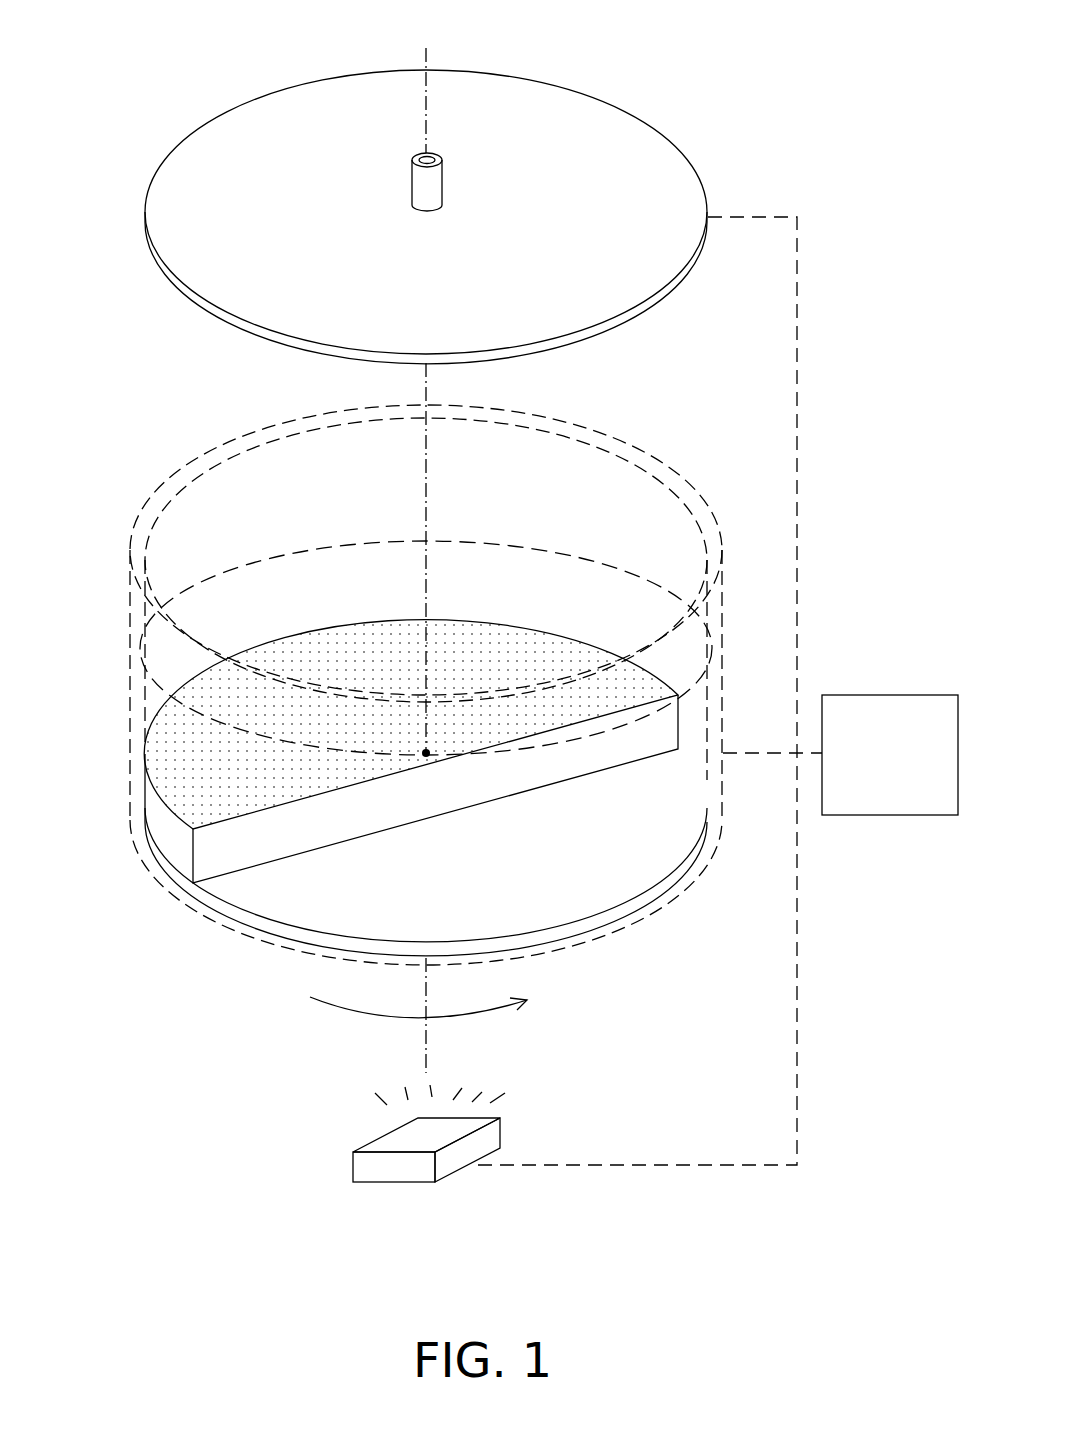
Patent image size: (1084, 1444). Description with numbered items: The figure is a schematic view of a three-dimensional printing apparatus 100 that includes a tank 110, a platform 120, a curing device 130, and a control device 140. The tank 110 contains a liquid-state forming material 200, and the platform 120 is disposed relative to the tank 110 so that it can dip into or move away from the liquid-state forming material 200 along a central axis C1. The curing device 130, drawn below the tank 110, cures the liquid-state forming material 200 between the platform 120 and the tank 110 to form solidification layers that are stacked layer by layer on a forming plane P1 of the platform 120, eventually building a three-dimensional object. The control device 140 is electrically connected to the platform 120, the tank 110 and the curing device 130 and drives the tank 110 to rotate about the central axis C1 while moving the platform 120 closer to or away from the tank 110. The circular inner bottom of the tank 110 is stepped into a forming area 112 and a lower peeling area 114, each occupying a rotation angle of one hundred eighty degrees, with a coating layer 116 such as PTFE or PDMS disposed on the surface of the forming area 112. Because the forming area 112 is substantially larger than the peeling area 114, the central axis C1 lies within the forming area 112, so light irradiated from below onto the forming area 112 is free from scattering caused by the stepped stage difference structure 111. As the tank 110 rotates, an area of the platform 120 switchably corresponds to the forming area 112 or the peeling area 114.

The three-dimensional printing apparatus 100 is at (900, 101).
The tank 110 is at (153, 493).
The stage difference structure 111 is at (381, 817).
The forming area 112 is at (172, 862).
The peeling area 114 is at (237, 913).
The coating layer 116 is at (206, 684).
The platform 120 is at (461, 217).
The curing device 130 is at (395, 1168).
The control device 140 is at (897, 815).
The liquid-state forming material 200 is at (208, 575).
The central axis C1 is at (425, 537).
The forming plane P1 is at (665, 306).